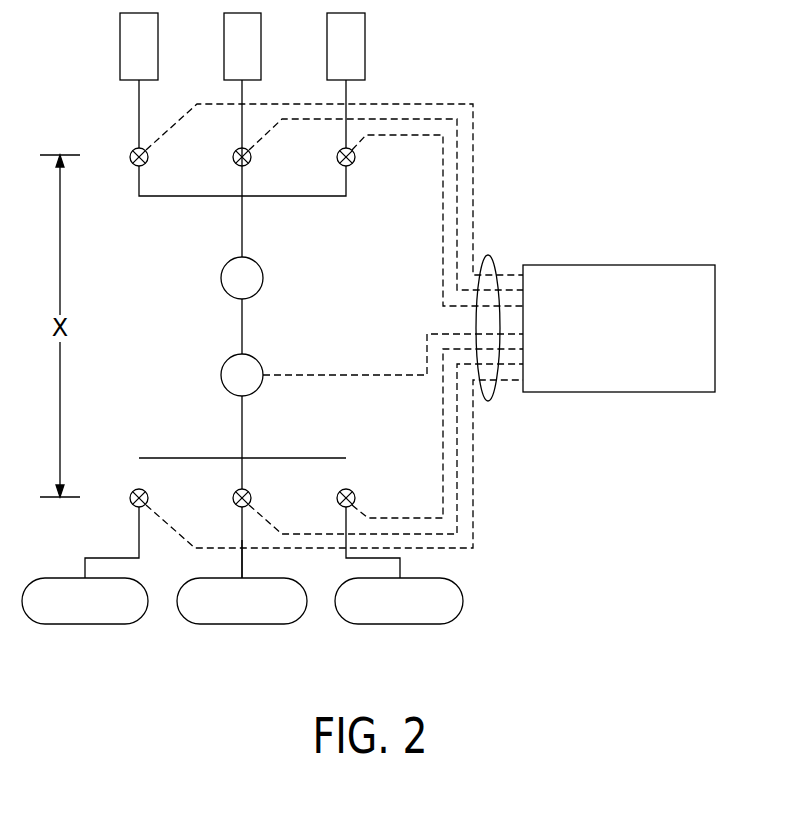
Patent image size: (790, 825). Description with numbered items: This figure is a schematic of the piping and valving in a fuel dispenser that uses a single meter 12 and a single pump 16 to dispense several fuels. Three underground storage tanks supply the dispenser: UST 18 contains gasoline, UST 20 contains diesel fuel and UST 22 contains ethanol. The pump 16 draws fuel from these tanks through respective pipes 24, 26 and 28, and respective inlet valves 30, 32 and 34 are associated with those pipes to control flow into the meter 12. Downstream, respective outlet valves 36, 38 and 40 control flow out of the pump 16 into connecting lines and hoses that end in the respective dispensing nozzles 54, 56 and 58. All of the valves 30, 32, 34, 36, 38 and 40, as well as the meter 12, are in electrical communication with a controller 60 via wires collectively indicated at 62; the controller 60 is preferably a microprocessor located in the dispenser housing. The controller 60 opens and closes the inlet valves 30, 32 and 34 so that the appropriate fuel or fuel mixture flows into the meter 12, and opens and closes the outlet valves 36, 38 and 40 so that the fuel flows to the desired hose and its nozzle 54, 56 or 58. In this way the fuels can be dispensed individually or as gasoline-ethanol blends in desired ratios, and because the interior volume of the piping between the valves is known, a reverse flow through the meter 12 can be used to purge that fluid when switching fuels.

The meter 12 is at (221, 375).
The pump 16 is at (221, 278).
The underground storage tank 18 is at (85, 624).
The underground storage tank 20 is at (243, 624).
The underground storage tank 22 is at (400, 624).
The pipe 24 is at (83, 570).
The pipe 26 is at (240, 576).
The pipe 28 is at (405, 576).
The inlet valve 30 is at (134, 490).
The inlet valve 32 is at (233, 495).
The inlet valve 34 is at (337, 495).
The outlet valve 36 is at (147, 161).
The outlet valve 38 is at (250, 161).
The outlet valve 40 is at (352, 163).
The nozzle 54 is at (120, 47).
The nozzle 56 is at (224, 47).
The nozzle 58 is at (365, 47).
The controller 60 is at (620, 392).
The wires 62 is at (490, 258).